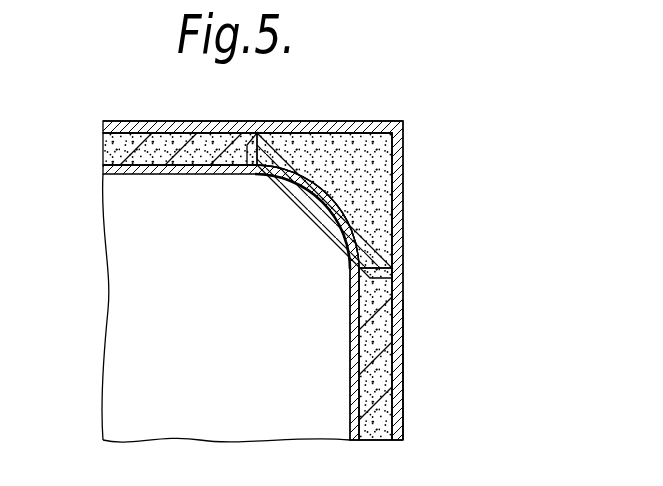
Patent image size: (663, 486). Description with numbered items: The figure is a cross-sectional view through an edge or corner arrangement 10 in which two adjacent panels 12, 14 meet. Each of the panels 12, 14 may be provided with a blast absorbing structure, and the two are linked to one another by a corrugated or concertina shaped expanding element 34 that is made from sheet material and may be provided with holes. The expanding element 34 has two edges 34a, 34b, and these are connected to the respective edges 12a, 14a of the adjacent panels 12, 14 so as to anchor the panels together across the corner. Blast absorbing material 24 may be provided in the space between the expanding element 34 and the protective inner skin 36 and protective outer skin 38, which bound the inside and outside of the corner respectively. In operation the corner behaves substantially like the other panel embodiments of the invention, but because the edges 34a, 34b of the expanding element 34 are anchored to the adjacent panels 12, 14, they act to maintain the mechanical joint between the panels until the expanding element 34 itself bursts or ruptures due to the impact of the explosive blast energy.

The corner assembly of container wall 10 is at (399, 116).
The panel 12 is at (183, 145).
The panel 14 is at (372, 392).
The edge of panel 12a is at (245, 137).
The edge of panel 14a is at (358, 304).
The blast absorbing material 24 is at (337, 188).
The expanding element 34 is at (383, 165).
The edge of expanding element 34a is at (372, 282).
The edge of expanding element 34b is at (246, 172).
The protective inner skin 36 is at (350, 410).
The protective outer skin 38 is at (403, 433).